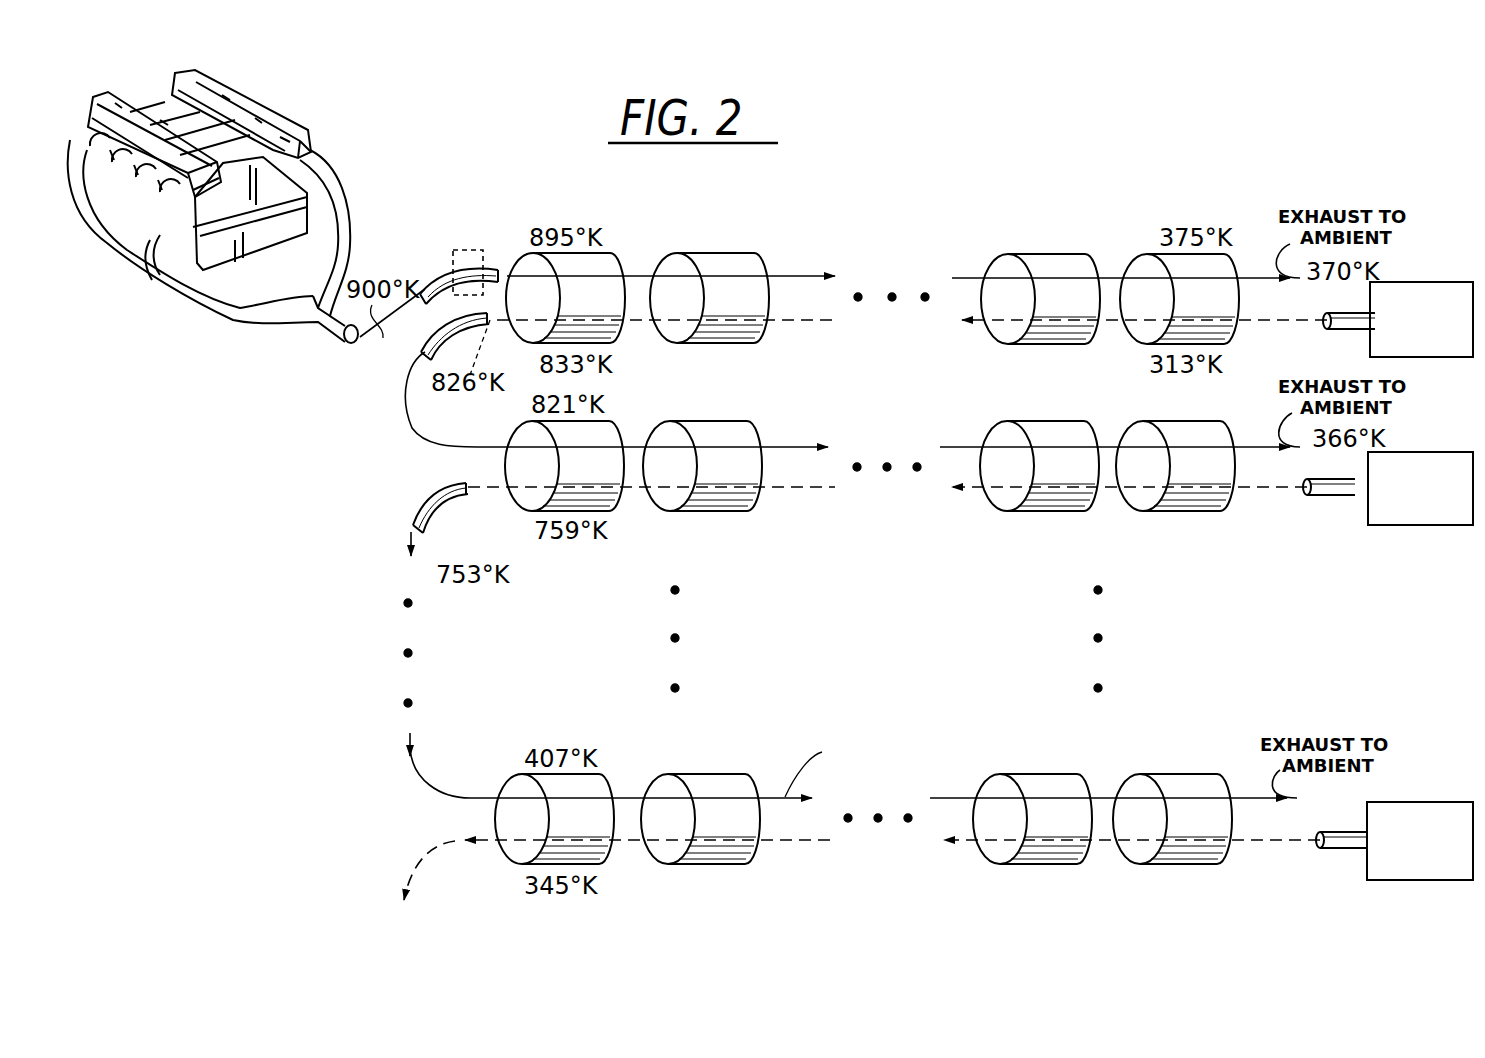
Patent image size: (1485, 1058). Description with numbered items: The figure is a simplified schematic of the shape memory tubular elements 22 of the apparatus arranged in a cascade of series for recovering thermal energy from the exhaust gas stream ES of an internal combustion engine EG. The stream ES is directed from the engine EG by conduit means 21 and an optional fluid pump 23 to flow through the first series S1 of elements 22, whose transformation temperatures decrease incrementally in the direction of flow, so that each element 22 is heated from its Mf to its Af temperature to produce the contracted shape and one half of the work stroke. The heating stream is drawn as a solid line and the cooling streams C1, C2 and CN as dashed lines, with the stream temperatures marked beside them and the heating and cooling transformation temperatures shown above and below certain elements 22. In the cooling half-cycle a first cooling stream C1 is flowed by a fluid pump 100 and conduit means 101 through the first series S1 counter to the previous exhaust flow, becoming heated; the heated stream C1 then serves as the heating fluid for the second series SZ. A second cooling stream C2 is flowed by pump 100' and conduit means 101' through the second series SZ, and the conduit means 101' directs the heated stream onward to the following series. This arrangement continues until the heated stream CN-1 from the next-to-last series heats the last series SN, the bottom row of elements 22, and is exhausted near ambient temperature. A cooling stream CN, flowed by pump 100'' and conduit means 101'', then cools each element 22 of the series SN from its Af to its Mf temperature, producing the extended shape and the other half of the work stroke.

The conduit means 21 is at (490, 262).
The shape memory element 22 is at (1175, 787).
The fluid pump 23 is at (462, 245).
The fluid pump 100 is at (1424, 298).
The conduit means 101 is at (868, 372).
The fluid pump 100' is at (1420, 515).
The conduit means 101' is at (827, 515).
The fluid pump 100'' is at (1407, 873).
The conduit means 101'' is at (1317, 867).
The internal combustion engine EG is at (358, 175).
The exhaust gas stream ES is at (372, 352).
The first series S1 is at (966, 230).
The second series SZ is at (355, 458).
The last series SN is at (396, 805).
The first cooling stream C1 is at (812, 320).
The second cooling stream C2 is at (795, 490).
The cooling stream for last series CN is at (805, 843).
The heated cooling stream for next-to-last series CN-1 is at (834, 768).